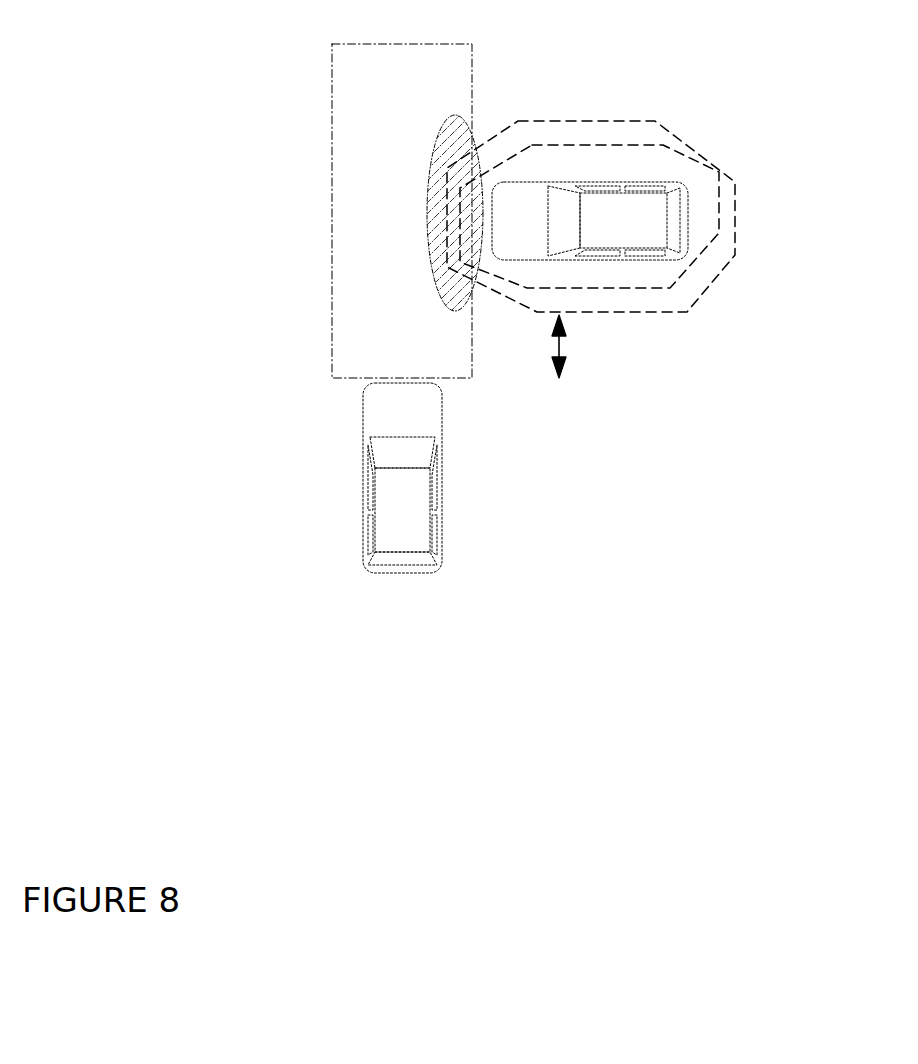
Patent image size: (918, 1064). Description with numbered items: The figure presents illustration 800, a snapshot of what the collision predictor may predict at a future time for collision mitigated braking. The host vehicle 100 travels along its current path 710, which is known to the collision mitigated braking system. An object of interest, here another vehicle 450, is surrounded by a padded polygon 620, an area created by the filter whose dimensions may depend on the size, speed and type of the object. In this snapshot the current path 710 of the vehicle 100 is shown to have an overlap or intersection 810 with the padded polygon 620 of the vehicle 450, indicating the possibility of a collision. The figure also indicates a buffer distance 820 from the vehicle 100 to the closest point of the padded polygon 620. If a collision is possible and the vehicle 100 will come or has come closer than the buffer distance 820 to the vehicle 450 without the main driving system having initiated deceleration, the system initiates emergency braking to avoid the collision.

The vehicle 100 is at (443, 477).
The vehicle 450 is at (623, 190).
The padded polygon 620 is at (710, 285).
The current path 710 is at (332, 212).
The illustration 800 is at (118, 835).
The overlap or intersection 810 is at (463, 117).
The buffer distance 820 is at (562, 345).